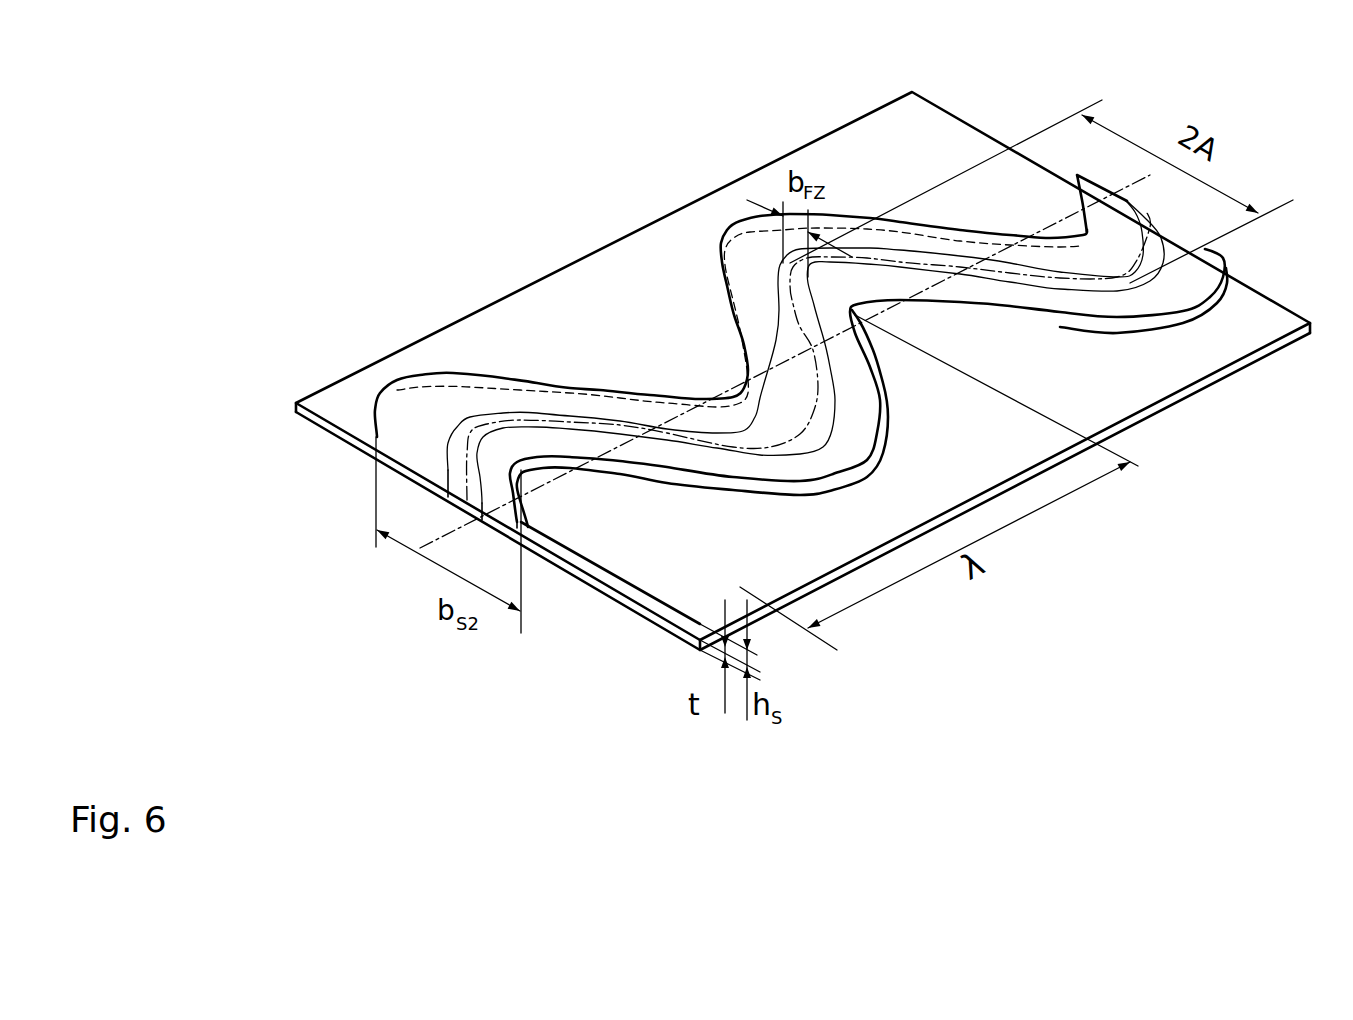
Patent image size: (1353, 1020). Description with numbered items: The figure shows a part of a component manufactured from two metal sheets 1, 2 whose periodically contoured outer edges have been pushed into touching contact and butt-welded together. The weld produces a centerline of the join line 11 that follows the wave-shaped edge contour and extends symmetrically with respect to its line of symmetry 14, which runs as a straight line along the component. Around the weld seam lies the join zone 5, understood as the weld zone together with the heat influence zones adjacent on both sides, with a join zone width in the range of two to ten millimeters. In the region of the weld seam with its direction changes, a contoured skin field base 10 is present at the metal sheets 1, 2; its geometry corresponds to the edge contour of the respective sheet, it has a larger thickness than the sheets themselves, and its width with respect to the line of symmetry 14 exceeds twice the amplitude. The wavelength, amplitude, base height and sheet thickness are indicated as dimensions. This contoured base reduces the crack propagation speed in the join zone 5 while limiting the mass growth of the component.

The metal sheet 1 is at (369, 383).
The metal sheet 2 is at (679, 583).
The join zone 5 is at (585, 425).
The skin field base 10 is at (435, 418).
The centerline of the join line 11 is at (795, 318).
The line of symmetry 14 is at (778, 362).